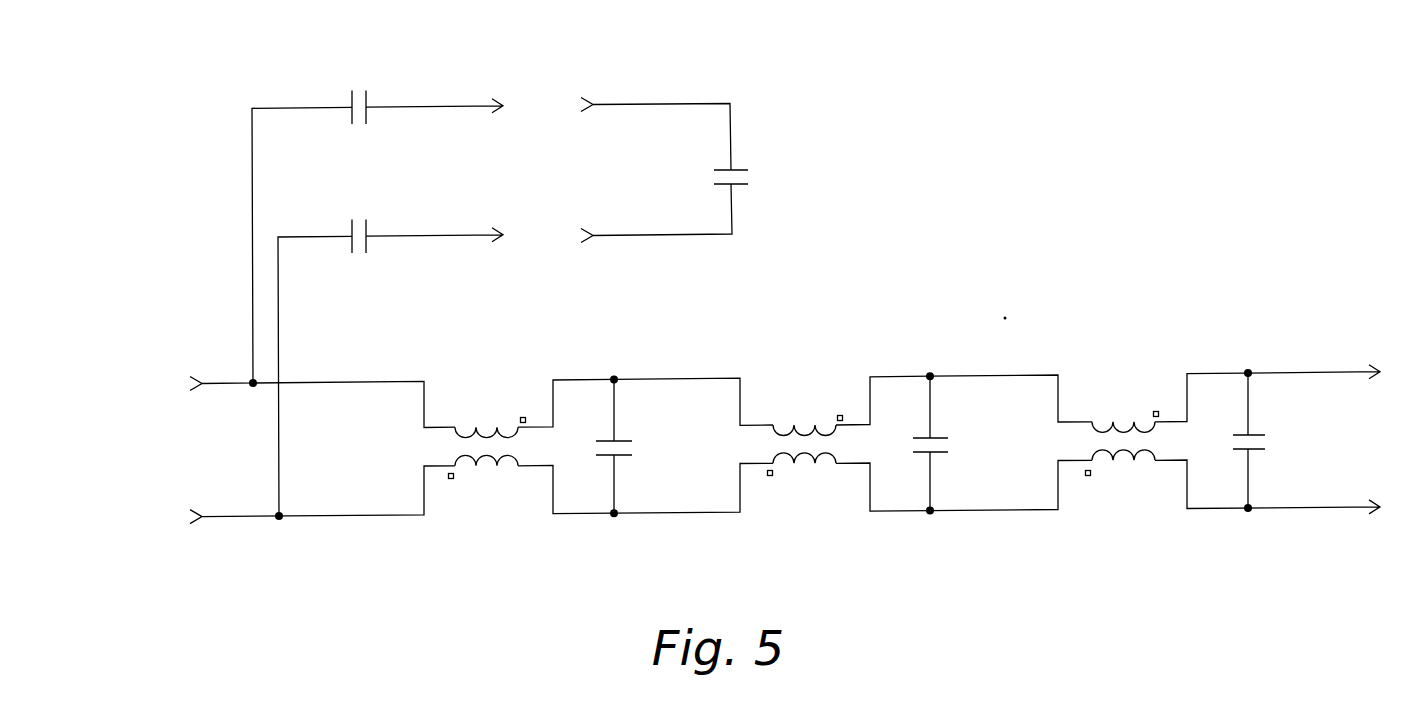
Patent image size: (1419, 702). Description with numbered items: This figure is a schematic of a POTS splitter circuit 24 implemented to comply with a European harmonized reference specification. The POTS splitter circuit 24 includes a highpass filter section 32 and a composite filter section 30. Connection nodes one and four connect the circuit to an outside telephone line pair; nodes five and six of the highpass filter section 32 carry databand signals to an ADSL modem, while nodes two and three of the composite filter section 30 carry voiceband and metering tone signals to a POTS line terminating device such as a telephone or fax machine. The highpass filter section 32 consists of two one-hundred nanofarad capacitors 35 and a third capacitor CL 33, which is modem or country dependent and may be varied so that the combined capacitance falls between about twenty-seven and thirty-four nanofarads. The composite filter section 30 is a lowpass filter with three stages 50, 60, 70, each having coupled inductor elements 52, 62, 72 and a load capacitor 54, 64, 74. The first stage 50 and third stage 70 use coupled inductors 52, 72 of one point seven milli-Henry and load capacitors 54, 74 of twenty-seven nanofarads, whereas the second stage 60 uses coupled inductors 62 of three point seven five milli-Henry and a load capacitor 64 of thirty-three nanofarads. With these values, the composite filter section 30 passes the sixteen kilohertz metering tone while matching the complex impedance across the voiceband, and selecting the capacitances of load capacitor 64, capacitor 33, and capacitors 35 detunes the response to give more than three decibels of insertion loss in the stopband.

The POTS splitter circuit 24 is at (908, 92).
The composite filter section 30 is at (844, 336).
The highpass filter section 32 is at (662, 266).
The third capacitor (CL) 33 is at (722, 168).
The capacitors 35 is at (367, 121).
The first stage 50 is at (539, 567).
The coupled inductors 52 is at (430, 447).
The load capacitor 54 is at (628, 441).
The second stage 60 is at (806, 542).
The coupled inductors 62 is at (848, 445).
The load capacitor 64 is at (945, 438).
The third stage 70 is at (1167, 556).
The coupled inductors 72 is at (1168, 443).
The load capacitor 74 is at (1262, 436).